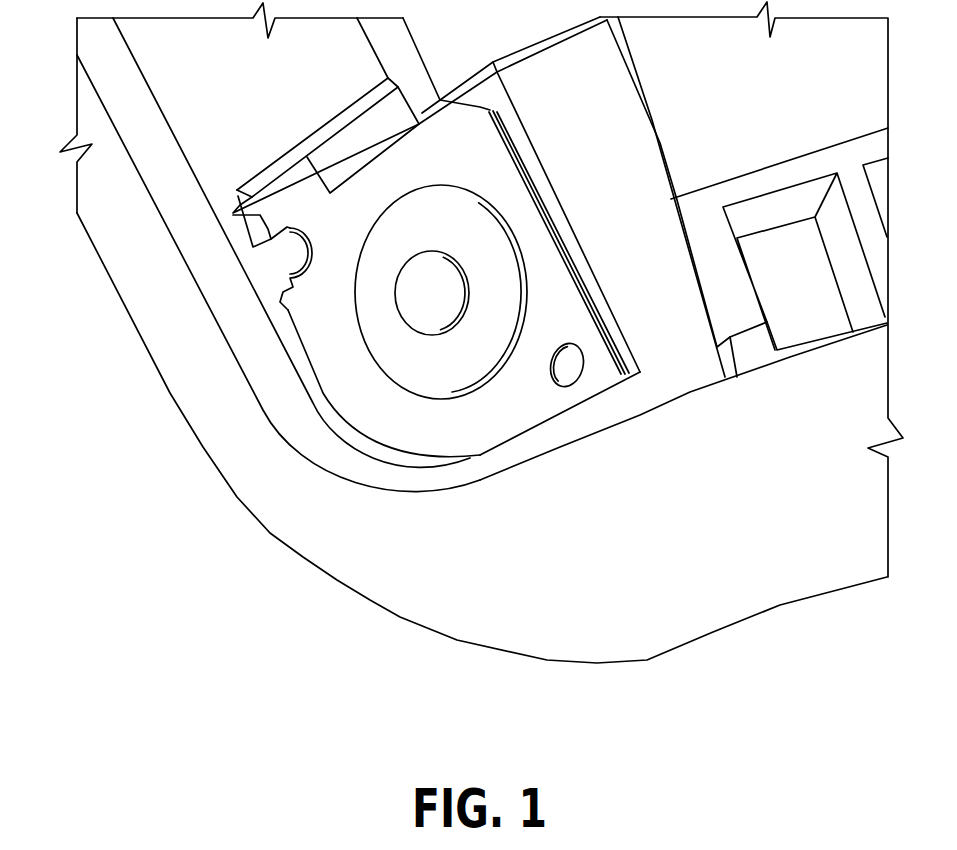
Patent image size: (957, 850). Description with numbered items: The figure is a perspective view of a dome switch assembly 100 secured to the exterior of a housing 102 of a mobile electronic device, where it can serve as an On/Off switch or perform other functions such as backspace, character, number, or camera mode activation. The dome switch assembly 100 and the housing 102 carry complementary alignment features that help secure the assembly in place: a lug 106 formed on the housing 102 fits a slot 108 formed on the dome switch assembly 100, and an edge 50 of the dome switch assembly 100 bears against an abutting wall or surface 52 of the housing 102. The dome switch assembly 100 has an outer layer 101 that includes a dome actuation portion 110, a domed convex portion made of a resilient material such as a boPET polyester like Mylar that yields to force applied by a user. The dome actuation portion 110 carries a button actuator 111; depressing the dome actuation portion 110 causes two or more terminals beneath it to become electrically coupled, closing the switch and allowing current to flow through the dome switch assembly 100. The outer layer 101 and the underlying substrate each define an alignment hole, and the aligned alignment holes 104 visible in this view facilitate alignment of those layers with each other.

The edge 50 is at (598, 393).
The abutting wall or surface 52 is at (613, 383).
The dome switch assembly 100 is at (353, 347).
The outer layer 101 is at (475, 152).
The housing 102 is at (762, 519).
The alignment holes 104 is at (557, 387).
The lug 106 is at (287, 256).
The slot 108 is at (289, 255).
The dome actuation portion 110 is at (397, 355).
The button actuator 111 is at (433, 298).